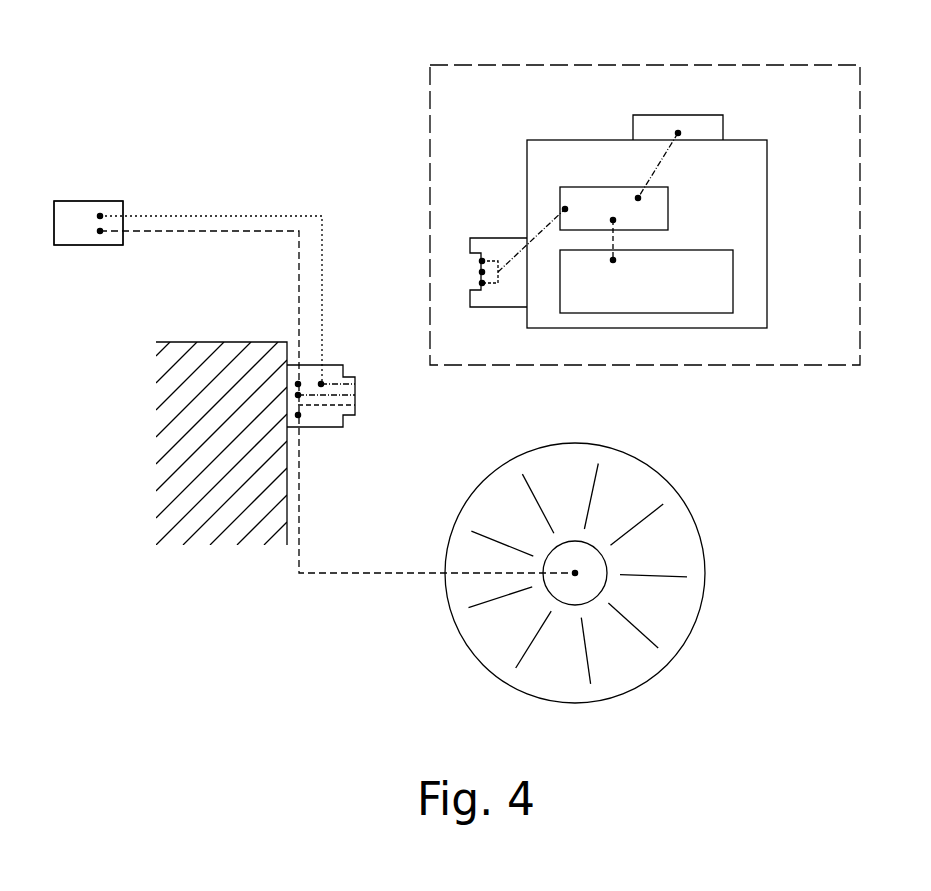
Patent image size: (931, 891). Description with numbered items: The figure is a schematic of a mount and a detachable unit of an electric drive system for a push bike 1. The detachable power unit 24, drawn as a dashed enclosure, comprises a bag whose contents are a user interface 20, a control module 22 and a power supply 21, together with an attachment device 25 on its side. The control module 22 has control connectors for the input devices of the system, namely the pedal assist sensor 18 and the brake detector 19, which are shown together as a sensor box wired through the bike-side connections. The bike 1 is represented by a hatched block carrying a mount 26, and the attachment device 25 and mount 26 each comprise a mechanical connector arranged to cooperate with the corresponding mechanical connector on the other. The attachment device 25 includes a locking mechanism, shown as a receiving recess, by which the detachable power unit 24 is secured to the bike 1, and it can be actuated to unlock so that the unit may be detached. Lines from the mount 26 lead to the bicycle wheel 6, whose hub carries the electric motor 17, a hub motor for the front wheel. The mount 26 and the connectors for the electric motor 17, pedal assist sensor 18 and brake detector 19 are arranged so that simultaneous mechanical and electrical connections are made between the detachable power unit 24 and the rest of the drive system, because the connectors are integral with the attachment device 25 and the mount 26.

The push bike 1 is at (202, 338).
The bicycle wheel 6 is at (700, 511).
The electric motor 17 is at (588, 571).
The pedal assist sensor 18 is at (73, 208).
The brake detector 19 is at (96, 208).
The user interface 20 is at (716, 129).
The power supply 21 is at (738, 282).
The control module 22 is at (672, 207).
The detachable power unit 24 is at (826, 371).
The attachment device 25 is at (481, 235).
The mount 26 is at (321, 432).